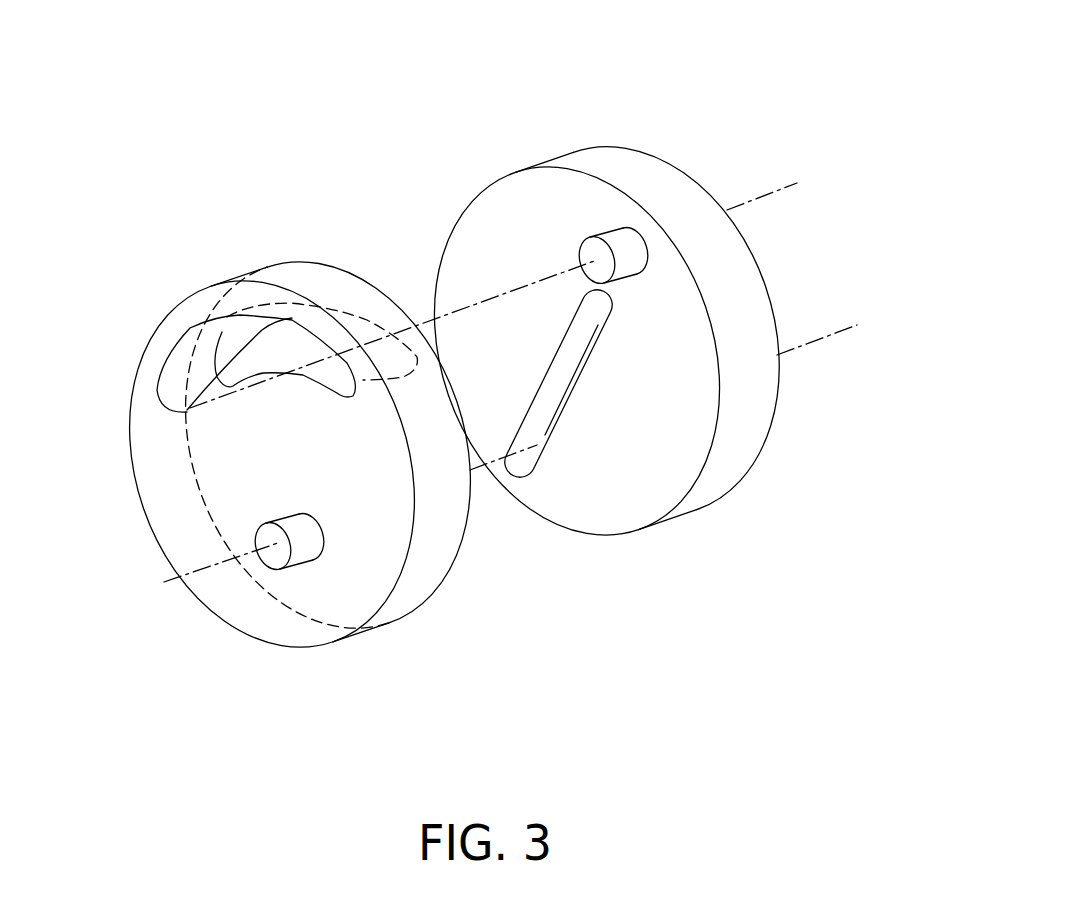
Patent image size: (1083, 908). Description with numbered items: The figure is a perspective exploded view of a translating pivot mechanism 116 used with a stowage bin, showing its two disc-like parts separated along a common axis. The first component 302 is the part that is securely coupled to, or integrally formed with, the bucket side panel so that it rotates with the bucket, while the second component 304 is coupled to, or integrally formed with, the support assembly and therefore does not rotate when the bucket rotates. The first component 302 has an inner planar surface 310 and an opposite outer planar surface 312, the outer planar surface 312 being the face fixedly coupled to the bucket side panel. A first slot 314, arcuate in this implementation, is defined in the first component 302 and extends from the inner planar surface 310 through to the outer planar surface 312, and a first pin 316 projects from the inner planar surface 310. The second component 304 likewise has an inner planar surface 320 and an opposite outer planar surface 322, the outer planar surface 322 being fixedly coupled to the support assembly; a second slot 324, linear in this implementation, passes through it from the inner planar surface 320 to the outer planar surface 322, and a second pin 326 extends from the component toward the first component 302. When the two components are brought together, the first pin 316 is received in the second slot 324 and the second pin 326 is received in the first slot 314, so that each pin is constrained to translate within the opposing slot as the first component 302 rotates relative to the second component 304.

The translating pivot mechanism 116 is at (762, 93).
The first component 302 is at (293, 272).
The second component 304 is at (605, 157).
The inner planar surface 310 is at (258, 422).
The outer planar surface 312 is at (153, 423).
The first slot 314 is at (238, 355).
The first pin 316 is at (298, 560).
The inner planar surface 320 is at (505, 197).
The outer planar surface 322 is at (638, 325).
The second slot 324 is at (562, 380).
The second pin 326 is at (623, 247).